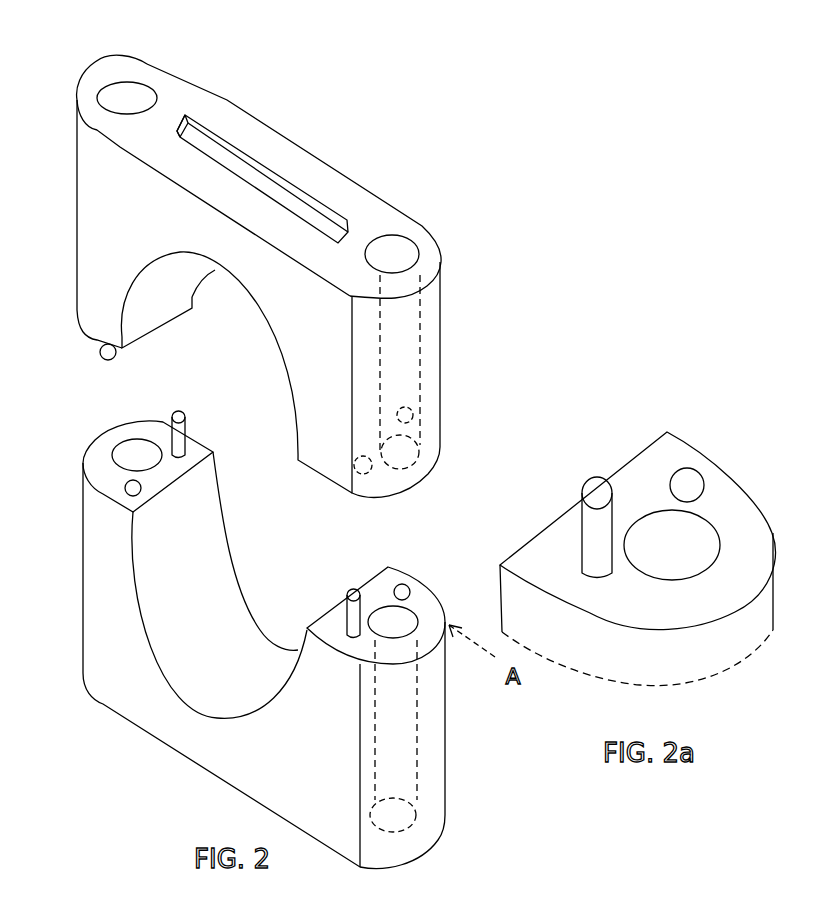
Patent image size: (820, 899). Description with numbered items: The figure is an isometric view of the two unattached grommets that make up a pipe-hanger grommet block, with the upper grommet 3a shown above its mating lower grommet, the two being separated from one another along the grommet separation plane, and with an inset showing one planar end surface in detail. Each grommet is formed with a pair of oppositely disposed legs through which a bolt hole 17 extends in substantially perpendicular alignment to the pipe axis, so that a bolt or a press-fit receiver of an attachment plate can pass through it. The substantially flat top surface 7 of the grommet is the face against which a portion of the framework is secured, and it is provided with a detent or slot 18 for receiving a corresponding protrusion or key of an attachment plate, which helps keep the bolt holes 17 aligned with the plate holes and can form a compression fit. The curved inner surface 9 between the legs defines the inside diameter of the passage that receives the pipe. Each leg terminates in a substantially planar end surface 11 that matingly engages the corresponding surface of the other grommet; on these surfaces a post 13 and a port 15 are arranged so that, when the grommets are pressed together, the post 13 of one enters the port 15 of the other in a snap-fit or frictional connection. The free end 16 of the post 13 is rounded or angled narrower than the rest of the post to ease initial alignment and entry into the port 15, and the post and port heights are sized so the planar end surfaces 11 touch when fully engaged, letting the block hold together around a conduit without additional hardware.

In FIG. 2, the top surface 7 is at (294, 260).
In FIG. 2, the upper grommet 3a is at (370, 187).
In FIG. 2, the curved inner surface 9 is at (212, 667).
In FIG. 2, the planar end surface 11 is at (103, 468).
In FIG. 2a, the planar end surface 11 is at (633, 477).
In FIG. 2, the post 13 is at (104, 346).
In FIG. 2a, the post 13 is at (570, 562).
In FIG. 2, the port 15 is at (125, 488).
In FIG. 2a, the port 15 is at (681, 470).
In FIG. 2a, the free end 16 is at (592, 487).
In FIG. 2, the bolt hole 17 is at (398, 257).
In FIG. 2a, the bolt hole 17 is at (673, 560).
In FIG. 2, the slot 18 is at (222, 142).